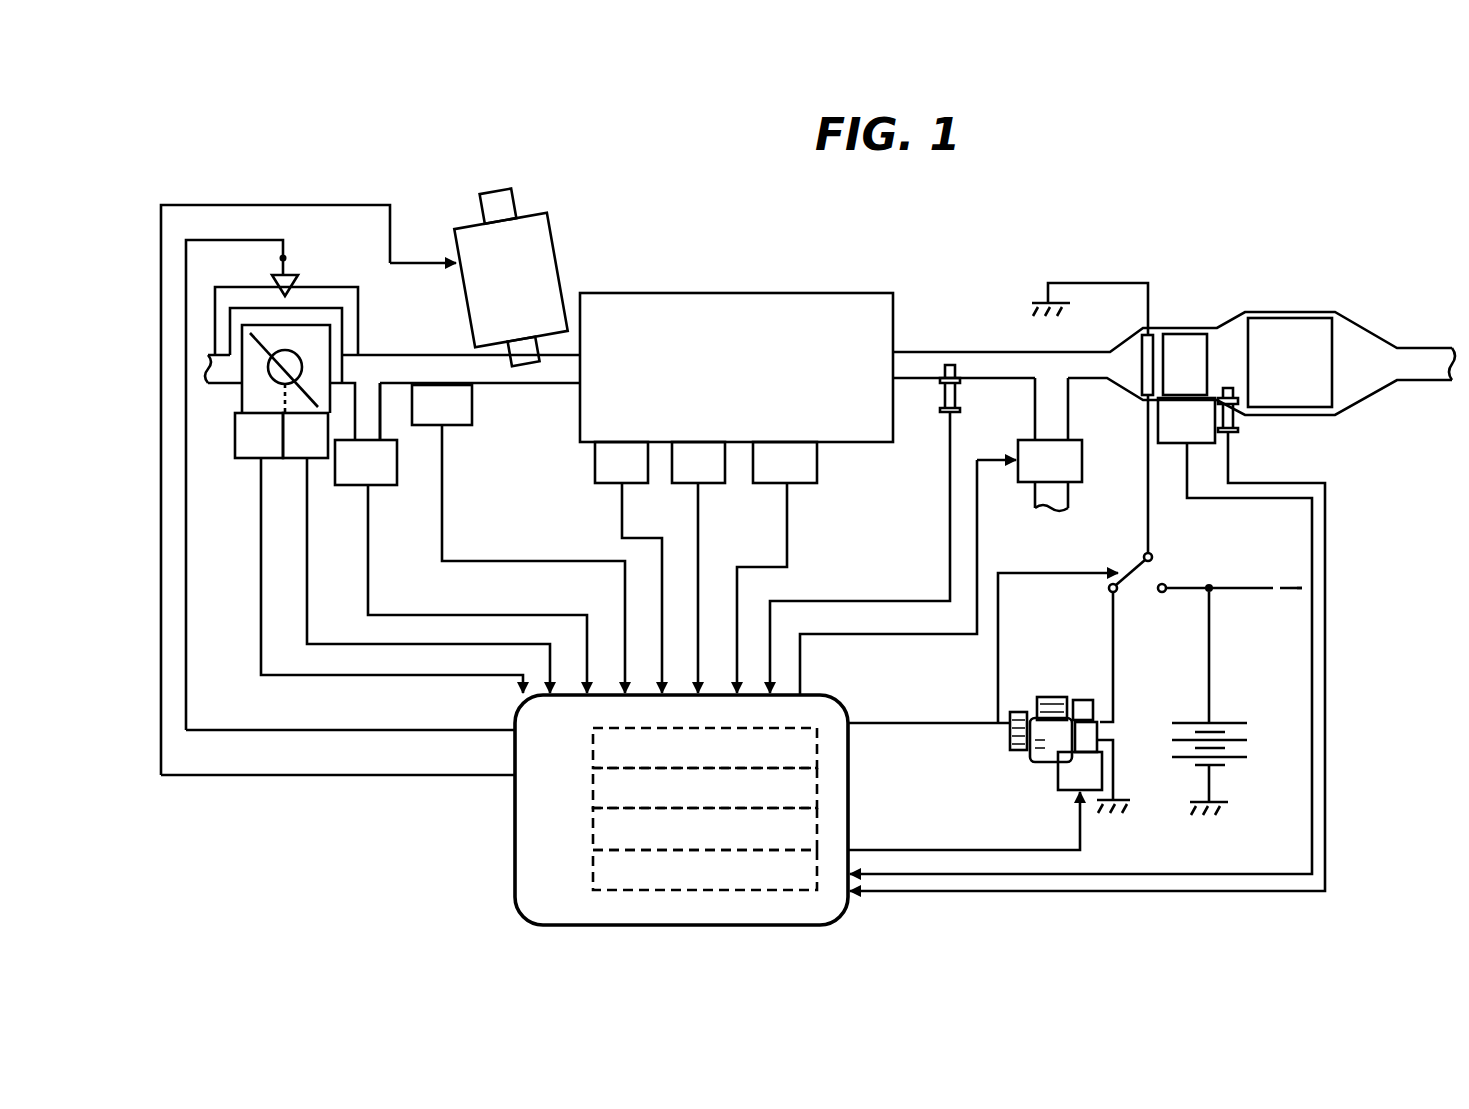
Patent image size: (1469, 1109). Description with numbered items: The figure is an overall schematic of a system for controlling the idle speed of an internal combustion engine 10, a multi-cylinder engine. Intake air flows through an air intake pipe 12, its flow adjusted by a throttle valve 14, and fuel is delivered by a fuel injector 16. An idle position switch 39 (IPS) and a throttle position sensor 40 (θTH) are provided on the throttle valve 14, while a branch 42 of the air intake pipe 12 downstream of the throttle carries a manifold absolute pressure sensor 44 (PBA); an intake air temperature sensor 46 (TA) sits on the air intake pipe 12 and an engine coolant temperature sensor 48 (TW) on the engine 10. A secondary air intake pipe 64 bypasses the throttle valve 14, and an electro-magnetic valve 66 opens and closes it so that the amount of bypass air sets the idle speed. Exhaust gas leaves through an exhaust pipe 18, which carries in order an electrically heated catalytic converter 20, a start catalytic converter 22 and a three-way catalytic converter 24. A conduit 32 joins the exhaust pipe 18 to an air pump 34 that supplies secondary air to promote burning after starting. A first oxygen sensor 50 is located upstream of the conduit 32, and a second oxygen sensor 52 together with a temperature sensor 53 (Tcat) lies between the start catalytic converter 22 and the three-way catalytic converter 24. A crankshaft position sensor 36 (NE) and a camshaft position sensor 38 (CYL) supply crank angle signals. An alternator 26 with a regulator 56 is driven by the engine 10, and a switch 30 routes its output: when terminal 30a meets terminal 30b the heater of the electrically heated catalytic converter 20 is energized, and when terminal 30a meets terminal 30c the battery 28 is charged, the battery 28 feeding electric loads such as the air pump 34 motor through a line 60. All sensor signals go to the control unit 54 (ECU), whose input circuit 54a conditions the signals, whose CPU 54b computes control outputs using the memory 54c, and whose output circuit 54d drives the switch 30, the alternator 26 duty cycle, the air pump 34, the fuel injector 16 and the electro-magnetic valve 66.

The engine 10 is at (848, 292).
The air intake pipe 12 is at (410, 353).
The throttle valve 14 is at (258, 390).
The fuel injector 16 is at (556, 265).
The exhaust pipe 18 is at (975, 350).
The electrically heated catalytic converter 20 is at (1148, 333).
The start catalytic converter 22 is at (1195, 335).
The three-way catalytic converter 24 is at (1318, 330).
The alternator 26 is at (1030, 700).
The battery 28 is at (1242, 738).
The switch 30 is at (1132, 560).
The terminal 30a is at (1108, 590).
The terminal 30b is at (1155, 557).
The terminal 30c is at (1162, 595).
The conduit 32 is at (1068, 420).
The air pump 34 is at (1035, 505).
The crankshaft position sensor 36 is at (712, 483).
The camshaft position sensor 38 is at (797, 483).
The idle position switch 39 is at (255, 458).
The throttle position sensor 40 is at (300, 458).
The branch 42 is at (380, 412).
The manifold absolute pressure sensor 44 is at (385, 488).
The intake air temperature sensor 46 is at (472, 410).
The engine coolant temperature sensor 48 is at (630, 483).
The first oxygen sensor 50 is at (945, 400).
The second oxygen sensor 52 is at (1238, 425).
The temperature sensor 53 is at (1178, 445).
The control unit 54 is at (515, 862).
The input circuit 54a is at (820, 730).
The CPU 54b is at (820, 790).
The memory 54c is at (820, 838).
The output circuit 54d is at (818, 880).
The regulator 56 is at (1060, 785).
The line 60 is at (1240, 590).
The secondary air intake pipe 64 is at (308, 300).
The electro-magnetic valve 66 is at (272, 280).